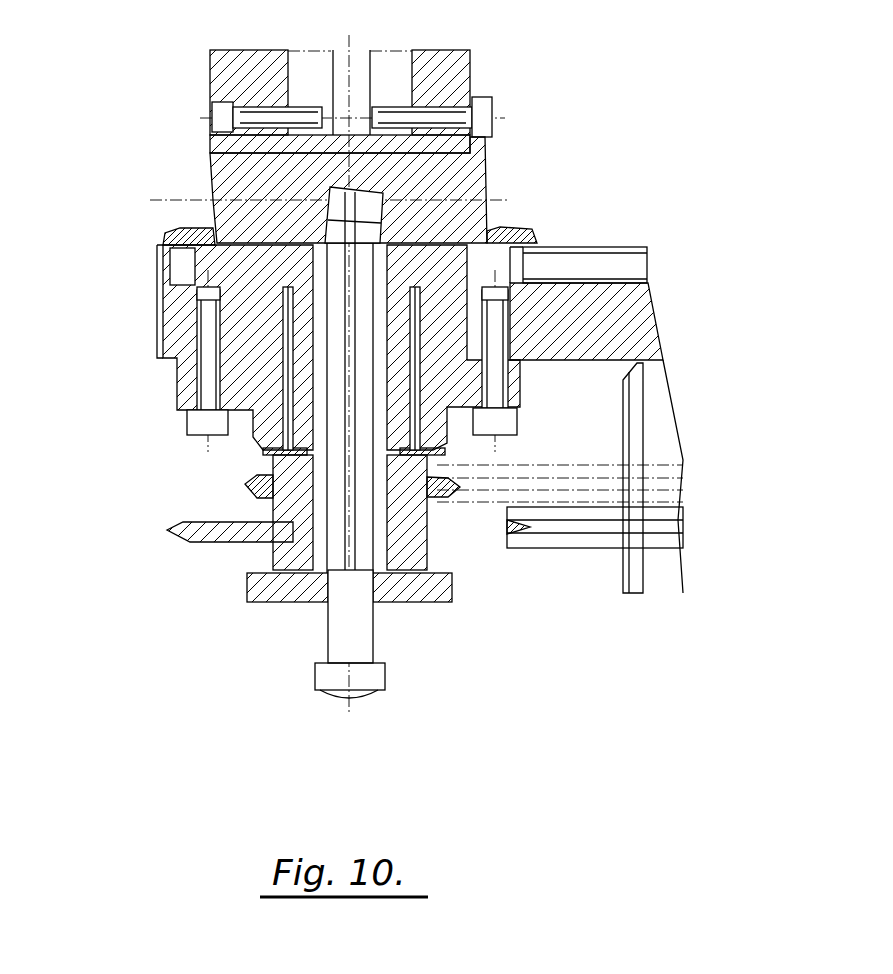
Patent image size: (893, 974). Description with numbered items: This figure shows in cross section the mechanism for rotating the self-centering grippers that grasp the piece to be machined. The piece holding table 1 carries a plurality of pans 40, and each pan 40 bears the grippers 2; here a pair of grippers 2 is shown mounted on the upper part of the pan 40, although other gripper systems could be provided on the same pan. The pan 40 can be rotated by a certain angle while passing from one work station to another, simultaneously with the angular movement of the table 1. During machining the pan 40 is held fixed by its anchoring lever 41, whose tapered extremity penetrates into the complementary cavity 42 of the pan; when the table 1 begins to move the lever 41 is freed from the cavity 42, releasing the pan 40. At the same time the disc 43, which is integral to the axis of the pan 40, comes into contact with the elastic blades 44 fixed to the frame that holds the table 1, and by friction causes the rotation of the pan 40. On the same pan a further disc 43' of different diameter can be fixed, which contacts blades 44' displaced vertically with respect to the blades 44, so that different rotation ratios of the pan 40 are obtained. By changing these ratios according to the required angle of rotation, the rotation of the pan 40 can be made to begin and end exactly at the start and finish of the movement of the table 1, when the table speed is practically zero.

The piece holding table 1 is at (588, 335).
The grippers 2 is at (440, 72).
The pan 40 is at (452, 242).
The anchoring lever 41 is at (570, 262).
The cavity 42 is at (534, 240).
The disc 43 is at (188, 550).
The disc of different diameter 43' is at (216, 489).
The elastic blades 44 is at (595, 563).
The blades 44' is at (555, 464).